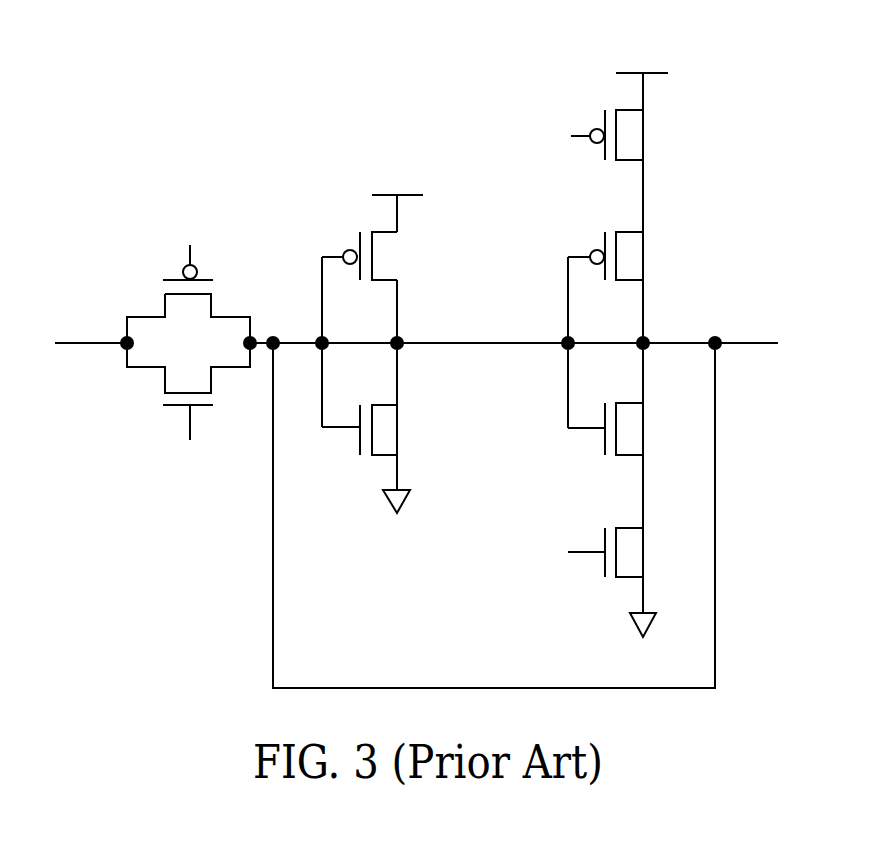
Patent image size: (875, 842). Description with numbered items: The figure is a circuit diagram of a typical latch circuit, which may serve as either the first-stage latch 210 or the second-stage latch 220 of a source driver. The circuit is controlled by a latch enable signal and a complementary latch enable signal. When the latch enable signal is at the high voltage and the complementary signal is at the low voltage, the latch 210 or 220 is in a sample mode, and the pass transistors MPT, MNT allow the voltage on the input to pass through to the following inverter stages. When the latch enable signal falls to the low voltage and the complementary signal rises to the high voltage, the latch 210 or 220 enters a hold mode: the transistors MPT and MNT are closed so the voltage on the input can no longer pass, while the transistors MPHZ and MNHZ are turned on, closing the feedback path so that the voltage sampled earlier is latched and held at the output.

The first-stage latch 210 is at (133, 113).
The second-stage latch 220 is at (438, 360).
The transistor MPT is at (165, 287).
The transistor MNT is at (165, 400).
The transistor MPHZ is at (645, 140).
The transistor MNHZ is at (605, 513).